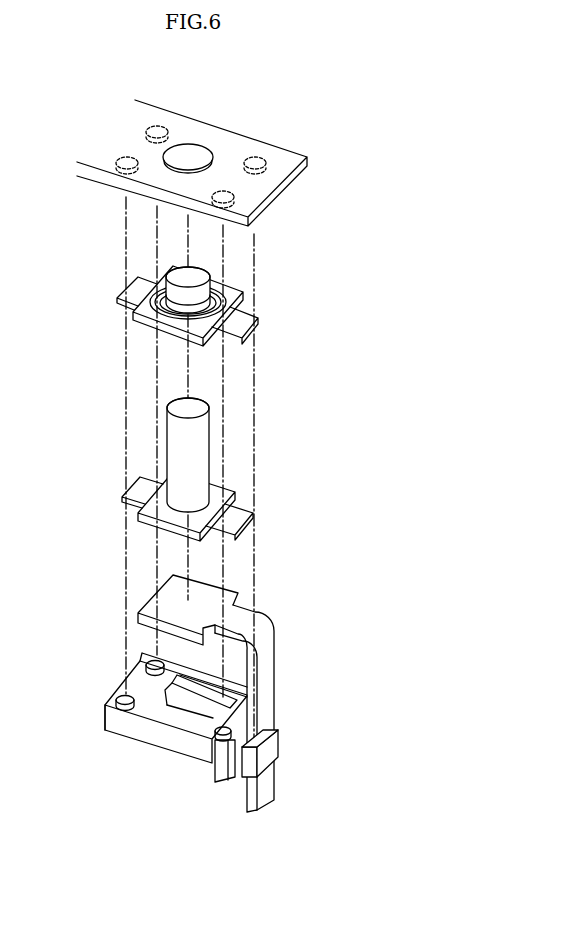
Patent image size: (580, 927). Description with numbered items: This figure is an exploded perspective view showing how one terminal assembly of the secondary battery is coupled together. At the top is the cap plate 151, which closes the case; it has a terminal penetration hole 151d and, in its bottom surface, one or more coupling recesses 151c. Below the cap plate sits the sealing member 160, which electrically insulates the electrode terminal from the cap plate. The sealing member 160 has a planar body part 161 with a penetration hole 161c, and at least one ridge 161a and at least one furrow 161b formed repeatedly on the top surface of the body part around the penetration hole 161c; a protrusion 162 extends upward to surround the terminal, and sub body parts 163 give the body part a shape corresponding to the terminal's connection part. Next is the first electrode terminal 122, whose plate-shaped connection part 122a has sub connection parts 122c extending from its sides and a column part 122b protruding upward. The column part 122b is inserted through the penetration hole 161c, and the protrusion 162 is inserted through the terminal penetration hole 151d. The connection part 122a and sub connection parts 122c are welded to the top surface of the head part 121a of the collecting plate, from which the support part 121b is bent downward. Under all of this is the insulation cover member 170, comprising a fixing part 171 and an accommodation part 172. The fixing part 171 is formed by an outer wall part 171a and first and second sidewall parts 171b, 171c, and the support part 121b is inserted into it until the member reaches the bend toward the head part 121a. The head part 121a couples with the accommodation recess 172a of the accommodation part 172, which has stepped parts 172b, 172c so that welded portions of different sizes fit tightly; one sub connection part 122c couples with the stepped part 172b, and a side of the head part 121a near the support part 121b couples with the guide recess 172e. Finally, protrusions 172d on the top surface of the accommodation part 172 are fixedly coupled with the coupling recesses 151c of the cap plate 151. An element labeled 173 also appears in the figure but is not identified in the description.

The cap plate 151 is at (227, 140).
The terminal penetration hole 151d is at (183, 160).
The coupling recesses 151c is at (260, 158).
The sealing member 160 is at (189, 284).
The body part 161 is at (150, 312).
The ridge 161a is at (225, 282).
The furrow 161b is at (233, 295).
The penetration hole 161c is at (193, 292).
The protrusion 162 is at (177, 280).
The sub body parts 163 is at (250, 320).
The first electrode terminal 122 is at (194, 461).
The connection part 122a is at (230, 488).
The column part 122b is at (178, 438).
The sub connection parts 122c is at (235, 520).
The head part 121a is at (150, 603).
The support part 121b is at (265, 658).
The insulation cover member 170 is at (185, 735).
The fixing part 171 is at (296, 771).
The outer wall part 171a is at (275, 743).
The first sidewall part 171b is at (275, 728).
The second sidewall part 171c is at (253, 768).
The accommodation part 172 is at (127, 730).
The accommodation recess 172a is at (187, 718).
The stepped part 172b is at (182, 732).
The stepped part 172c is at (128, 680).
The protrusions 172d is at (115, 695).
The guide recess 172e is at (227, 745).
The side wall 173 is at (127, 740).